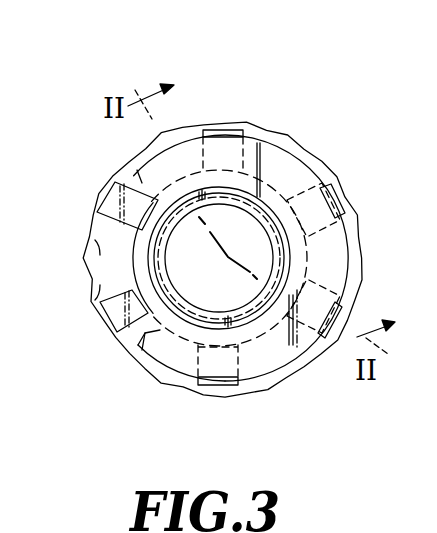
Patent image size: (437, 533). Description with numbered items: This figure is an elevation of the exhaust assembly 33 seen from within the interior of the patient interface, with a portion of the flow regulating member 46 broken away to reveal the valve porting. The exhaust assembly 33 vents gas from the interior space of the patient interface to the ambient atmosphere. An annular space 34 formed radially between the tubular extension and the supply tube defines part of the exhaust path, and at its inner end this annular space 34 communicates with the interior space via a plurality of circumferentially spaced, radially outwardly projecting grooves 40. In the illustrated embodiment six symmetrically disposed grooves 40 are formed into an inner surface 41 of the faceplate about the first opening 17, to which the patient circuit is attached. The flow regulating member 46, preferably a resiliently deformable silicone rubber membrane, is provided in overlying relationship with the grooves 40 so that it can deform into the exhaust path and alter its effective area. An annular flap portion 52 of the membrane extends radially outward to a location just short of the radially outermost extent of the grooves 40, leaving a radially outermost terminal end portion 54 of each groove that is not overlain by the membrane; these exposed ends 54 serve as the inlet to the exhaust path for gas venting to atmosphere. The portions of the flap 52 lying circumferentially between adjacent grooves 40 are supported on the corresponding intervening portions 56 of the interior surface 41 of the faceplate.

The exhaust assembly 33 is at (76, 92).
The inner surface of faceplate 41 is at (118, 166).
The first opening 17 is at (143, 240).
The annular space 34 is at (133, 279).
The grooves 40 is at (102, 196).
The annular flap portion 52 is at (262, 158).
The radially outermost terminal end portion of groove 54 is at (224, 130).
The intervening portions of interior surface 56 is at (104, 270).
The flow regulating member 46 is at (176, 358).